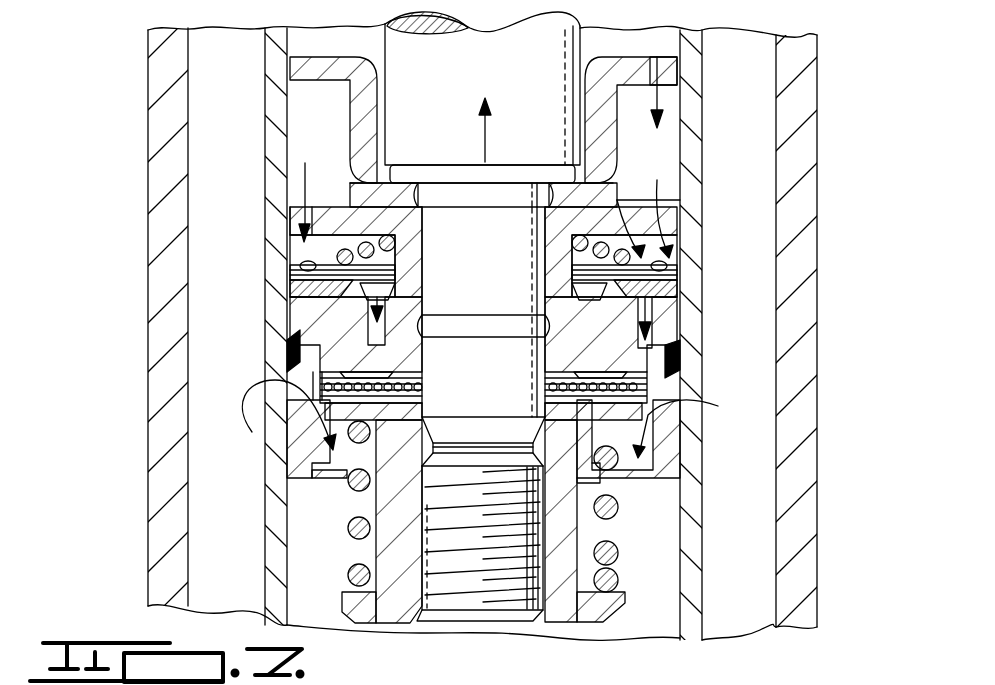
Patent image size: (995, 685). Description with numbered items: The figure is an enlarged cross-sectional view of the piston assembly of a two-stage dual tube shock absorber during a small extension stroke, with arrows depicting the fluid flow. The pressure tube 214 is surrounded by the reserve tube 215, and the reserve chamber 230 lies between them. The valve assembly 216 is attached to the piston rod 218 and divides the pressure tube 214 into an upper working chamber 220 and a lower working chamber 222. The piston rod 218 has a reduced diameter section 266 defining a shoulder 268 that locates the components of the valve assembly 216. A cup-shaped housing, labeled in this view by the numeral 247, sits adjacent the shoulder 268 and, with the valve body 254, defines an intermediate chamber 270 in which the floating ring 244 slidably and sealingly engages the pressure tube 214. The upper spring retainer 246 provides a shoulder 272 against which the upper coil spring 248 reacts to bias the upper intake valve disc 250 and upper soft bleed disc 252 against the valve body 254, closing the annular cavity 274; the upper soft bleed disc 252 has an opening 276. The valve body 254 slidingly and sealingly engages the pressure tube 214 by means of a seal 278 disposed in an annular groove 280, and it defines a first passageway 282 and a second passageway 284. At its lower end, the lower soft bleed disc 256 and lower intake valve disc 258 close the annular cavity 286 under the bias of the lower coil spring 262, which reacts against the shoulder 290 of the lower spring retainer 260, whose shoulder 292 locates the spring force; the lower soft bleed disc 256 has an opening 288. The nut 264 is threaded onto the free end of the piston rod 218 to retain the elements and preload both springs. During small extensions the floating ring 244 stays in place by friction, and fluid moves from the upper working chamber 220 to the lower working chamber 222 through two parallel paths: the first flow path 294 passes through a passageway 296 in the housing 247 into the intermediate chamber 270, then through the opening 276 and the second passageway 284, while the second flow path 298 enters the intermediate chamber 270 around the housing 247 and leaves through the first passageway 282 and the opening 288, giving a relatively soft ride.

The pressure tube 214 is at (277, 283).
The reserve tube 215 is at (160, 446).
The valve assembly 216 is at (222, 378).
The piston rod 218 is at (512, 67).
The upper working chamber 220 is at (307, 41).
The lower working chamber 222 is at (300, 572).
The reserve chamber 230 is at (212, 404).
The floating ring 244 is at (289, 207).
The upper spring retainer 246 is at (320, 232).
The seal carrier 247 is at (372, 126).
The upper coil spring 248 is at (303, 267).
The upper intake valve disc 250 is at (327, 277).
The upper soft bleed disc 252 is at (300, 318).
The valve body 254 is at (270, 415).
The lower soft bleed disc 256 is at (535, 336).
The lower intake valve disc 258 is at (643, 388).
The lower spring retainer 260 is at (613, 413).
The lower coil spring 262 is at (615, 506).
The nut 264 is at (617, 578).
The reduced diameter section 266 is at (504, 418).
The shoulder 268 is at (553, 207).
The intermediate chamber 270 is at (672, 158).
The shoulder 272 is at (570, 257).
The annular cavity 274 is at (637, 293).
The opening 276 is at (652, 273).
The seal 278 is at (298, 395).
The annular groove 280 is at (295, 432).
The first passageway 282 is at (395, 318).
The second passageway 284 is at (652, 345).
The annular cavity 286 is at (340, 387).
The opening 288 is at (345, 373).
The shoulder 290 is at (618, 446).
The shoulder 292 is at (698, 425).
The first flow path 294 is at (672, 203).
The passageway 296 is at (672, 70).
The second flow path 298 is at (305, 163).